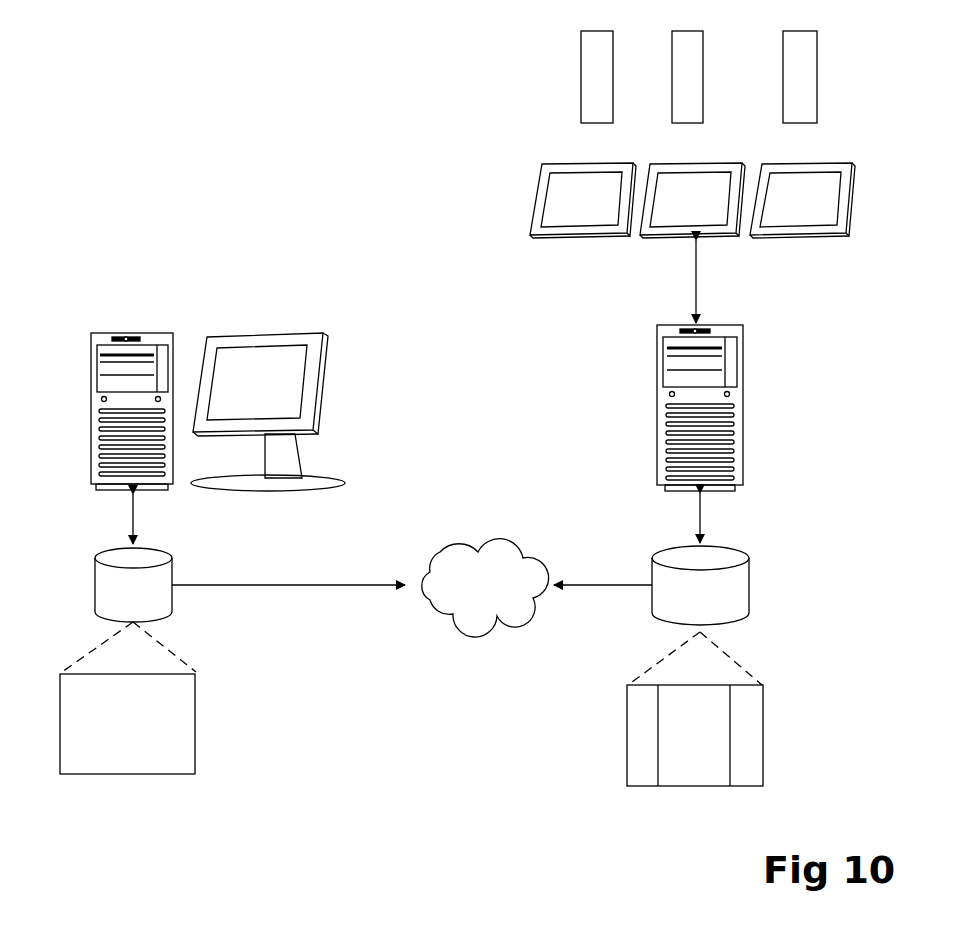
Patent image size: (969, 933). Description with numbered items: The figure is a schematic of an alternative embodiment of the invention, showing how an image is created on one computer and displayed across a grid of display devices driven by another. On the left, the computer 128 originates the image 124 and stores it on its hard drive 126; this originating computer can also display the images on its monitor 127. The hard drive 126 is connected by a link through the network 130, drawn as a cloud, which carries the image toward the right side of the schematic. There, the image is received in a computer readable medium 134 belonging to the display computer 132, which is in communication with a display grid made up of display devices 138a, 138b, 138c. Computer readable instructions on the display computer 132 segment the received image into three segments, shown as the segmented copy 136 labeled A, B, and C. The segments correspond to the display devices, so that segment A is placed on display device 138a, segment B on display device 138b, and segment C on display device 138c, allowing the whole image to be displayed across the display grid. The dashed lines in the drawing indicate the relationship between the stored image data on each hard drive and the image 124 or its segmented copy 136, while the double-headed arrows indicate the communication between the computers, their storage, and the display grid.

The image 124 is at (196, 746).
The hard drive 126 is at (174, 583).
The monitor 127 is at (258, 333).
The computer 128 is at (110, 335).
The network 130 is at (458, 548).
The display computer 132 is at (744, 437).
The computer readable medium 134 is at (750, 607).
The image segments 136 is at (764, 763).
The display device 138a is at (580, 163).
The display device 138b is at (710, 144).
The display device 138c is at (822, 145).